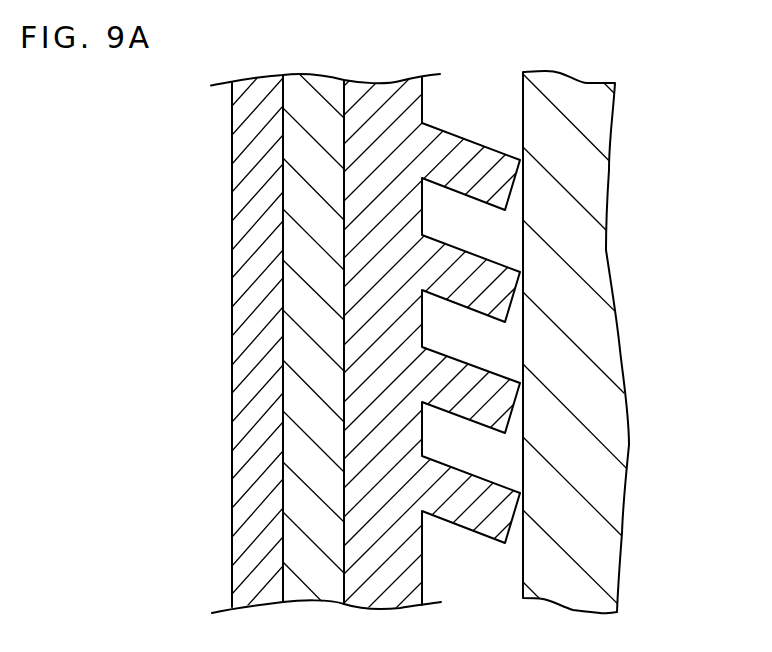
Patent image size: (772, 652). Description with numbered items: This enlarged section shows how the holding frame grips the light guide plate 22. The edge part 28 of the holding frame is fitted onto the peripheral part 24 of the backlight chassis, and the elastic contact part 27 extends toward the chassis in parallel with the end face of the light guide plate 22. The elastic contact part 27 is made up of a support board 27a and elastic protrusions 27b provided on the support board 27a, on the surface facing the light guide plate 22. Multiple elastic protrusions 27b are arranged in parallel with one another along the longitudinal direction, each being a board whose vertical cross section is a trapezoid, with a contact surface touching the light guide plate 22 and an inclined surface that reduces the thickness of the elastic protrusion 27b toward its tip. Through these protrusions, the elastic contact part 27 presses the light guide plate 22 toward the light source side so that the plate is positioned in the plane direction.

The light guide plate 22 is at (613, 557).
The peripheral part 24 is at (293, 196).
The elastic contact part 27 is at (420, 326).
The support board 27a is at (378, 97).
The elastic protrusion 27b is at (490, 143).
The edge part 28 is at (232, 292).